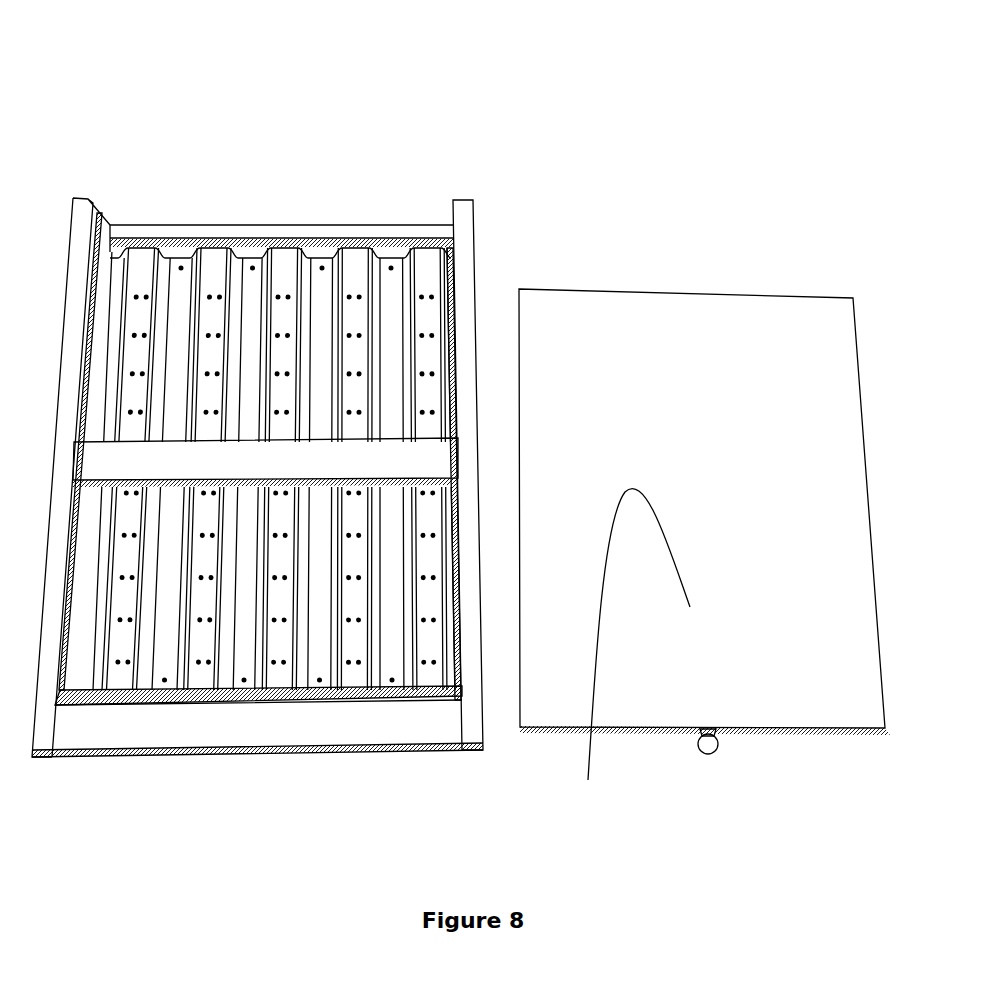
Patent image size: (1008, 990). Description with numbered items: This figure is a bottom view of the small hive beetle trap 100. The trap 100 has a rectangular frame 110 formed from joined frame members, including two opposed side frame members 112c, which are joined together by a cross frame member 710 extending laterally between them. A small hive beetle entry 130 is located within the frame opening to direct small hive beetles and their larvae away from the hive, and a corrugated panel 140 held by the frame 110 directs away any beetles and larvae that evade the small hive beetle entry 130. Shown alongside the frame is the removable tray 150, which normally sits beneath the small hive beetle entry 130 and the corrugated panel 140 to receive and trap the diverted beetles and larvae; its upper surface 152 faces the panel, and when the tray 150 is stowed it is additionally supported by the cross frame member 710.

The trap 100 is at (803, 81).
The rectangular frame 110 is at (496, 264).
The side frame members 112c is at (470, 705).
The small hive beetle entry 130 is at (242, 709).
The corrugated panel 140 is at (317, 293).
The removable tray 150 is at (804, 259).
The upper surface 152 is at (627, 651).
The cross frame member 710 is at (202, 465).